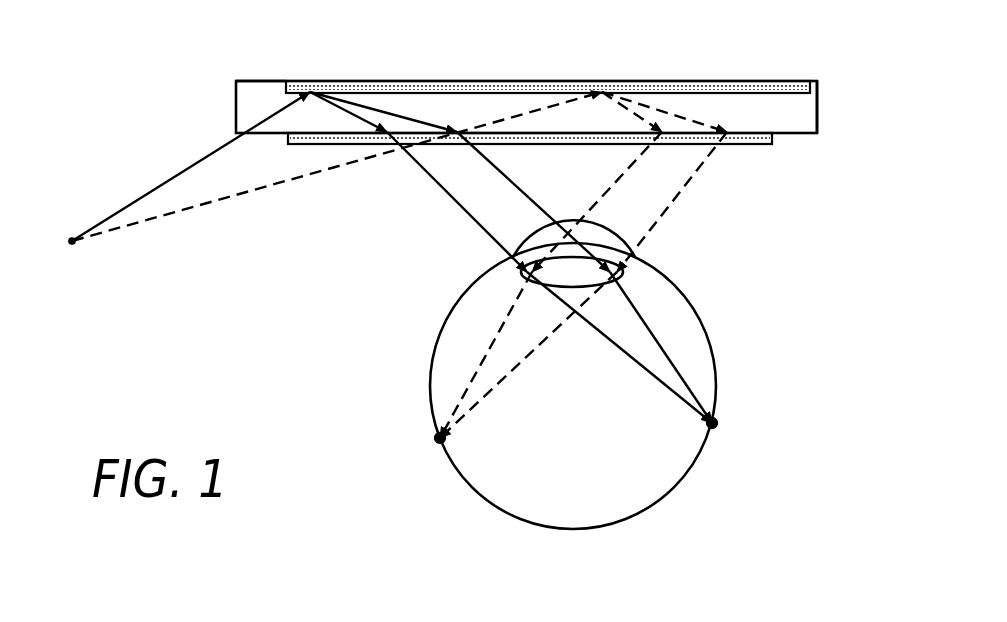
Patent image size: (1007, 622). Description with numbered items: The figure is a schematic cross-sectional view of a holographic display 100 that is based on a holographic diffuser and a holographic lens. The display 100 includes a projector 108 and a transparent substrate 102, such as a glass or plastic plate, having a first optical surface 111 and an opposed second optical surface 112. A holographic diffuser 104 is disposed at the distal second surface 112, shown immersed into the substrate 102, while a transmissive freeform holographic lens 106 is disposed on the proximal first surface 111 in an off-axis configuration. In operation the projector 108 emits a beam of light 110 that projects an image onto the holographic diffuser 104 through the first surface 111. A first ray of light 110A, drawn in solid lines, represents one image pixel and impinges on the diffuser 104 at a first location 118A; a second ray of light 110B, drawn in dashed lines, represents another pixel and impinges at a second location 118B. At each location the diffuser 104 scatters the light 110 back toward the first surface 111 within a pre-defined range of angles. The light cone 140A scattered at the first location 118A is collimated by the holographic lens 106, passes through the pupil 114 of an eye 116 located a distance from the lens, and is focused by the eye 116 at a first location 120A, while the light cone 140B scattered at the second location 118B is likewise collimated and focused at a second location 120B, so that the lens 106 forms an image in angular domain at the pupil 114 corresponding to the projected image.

The display 100 is at (347, 290).
The substrate 102 is at (245, 107).
The holographic diffuser 104 is at (518, 81).
The holographic lens 106 is at (747, 144).
The projector 108 is at (72, 247).
The beam of light 110 is at (337, 187).
The first ray of light 110A is at (128, 207).
The second ray of light 110B is at (258, 197).
The first optical surface 111 is at (798, 134).
The second optical surface 112 is at (260, 80).
The pupil 114 is at (623, 282).
The eye 116 is at (603, 485).
The first location 118A is at (315, 82).
The second location 118B is at (605, 81).
The first location 120A is at (720, 425).
The second location 120B is at (434, 438).
The light cone 140A is at (383, 123).
The light cone 140B is at (677, 122).